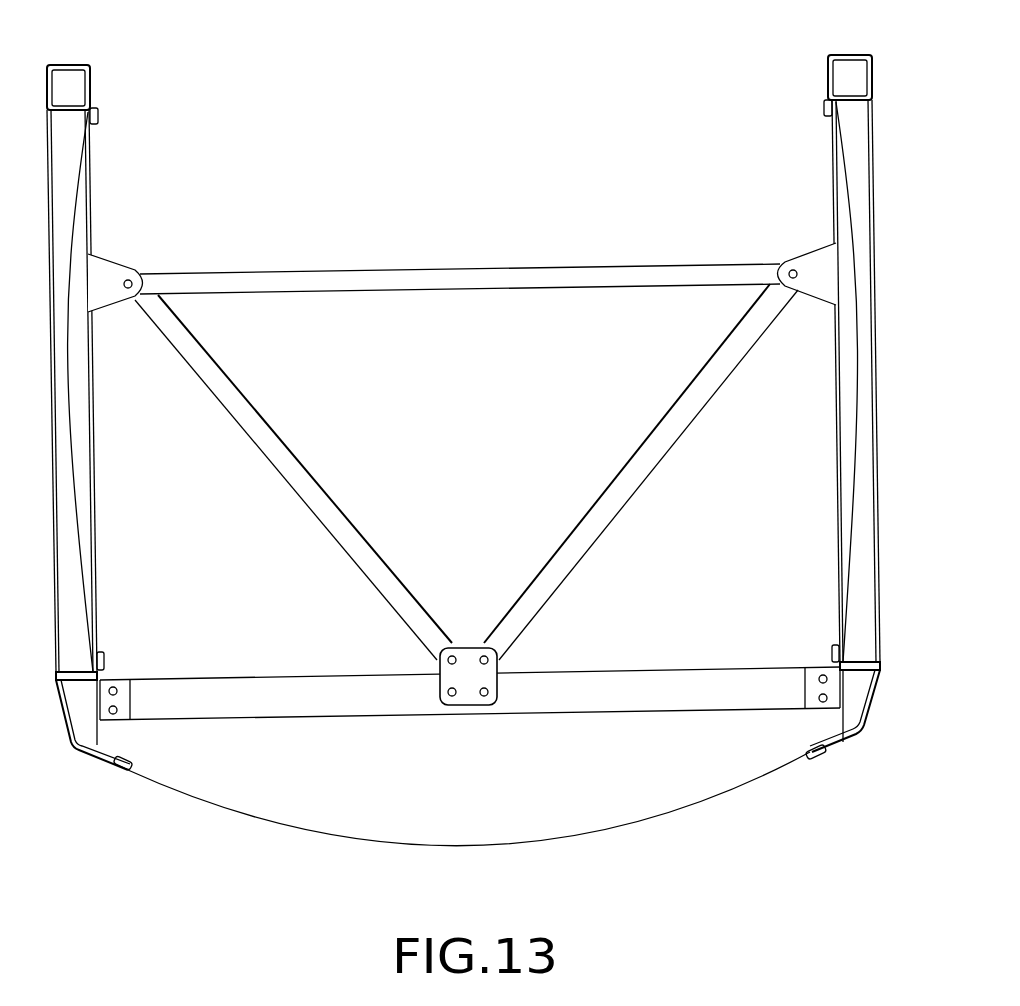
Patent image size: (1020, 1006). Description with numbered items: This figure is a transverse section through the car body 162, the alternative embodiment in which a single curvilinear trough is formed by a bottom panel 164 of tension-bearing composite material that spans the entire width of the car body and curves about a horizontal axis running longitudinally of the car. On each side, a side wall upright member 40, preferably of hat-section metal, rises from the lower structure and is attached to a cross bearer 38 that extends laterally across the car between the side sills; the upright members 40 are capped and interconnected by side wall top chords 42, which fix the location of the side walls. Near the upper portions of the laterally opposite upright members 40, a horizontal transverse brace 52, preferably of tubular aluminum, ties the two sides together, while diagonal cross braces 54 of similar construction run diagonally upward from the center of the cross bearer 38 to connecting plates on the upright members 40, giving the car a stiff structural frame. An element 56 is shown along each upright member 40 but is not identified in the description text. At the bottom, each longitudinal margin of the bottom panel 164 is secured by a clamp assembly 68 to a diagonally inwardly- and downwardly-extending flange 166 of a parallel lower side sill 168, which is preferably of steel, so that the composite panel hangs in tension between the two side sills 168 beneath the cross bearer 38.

The car body 162 is at (558, 147).
The side wall upright member 40 is at (100, 532).
The side wall top chord 42 is at (90, 76).
The strap 56 is at (70, 420).
The clamp assembly 68 is at (100, 116).
The horizontal transverse brace 52 is at (396, 274).
The diagonal cross brace 54 is at (350, 523).
The cross bearer 38 is at (275, 690).
The bottom panel 164 is at (480, 848).
The flange 166 is at (825, 760).
The lower side sill 168 is at (870, 712).